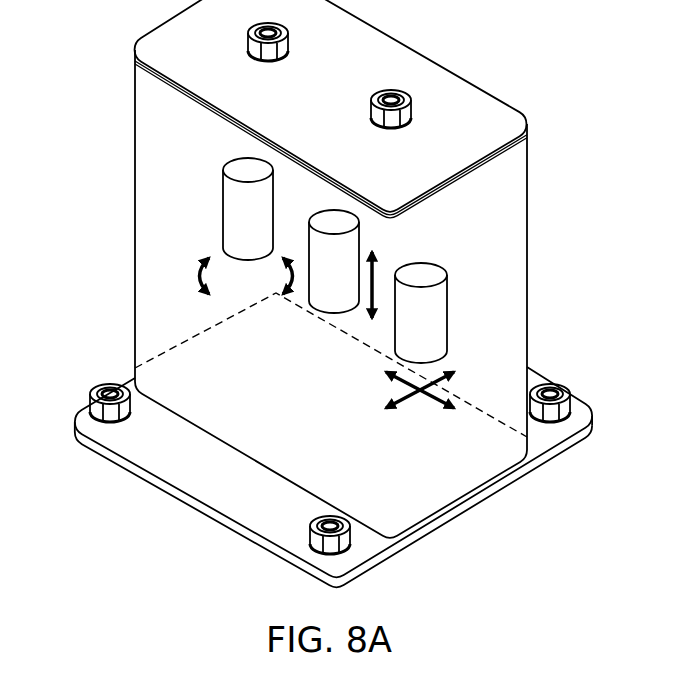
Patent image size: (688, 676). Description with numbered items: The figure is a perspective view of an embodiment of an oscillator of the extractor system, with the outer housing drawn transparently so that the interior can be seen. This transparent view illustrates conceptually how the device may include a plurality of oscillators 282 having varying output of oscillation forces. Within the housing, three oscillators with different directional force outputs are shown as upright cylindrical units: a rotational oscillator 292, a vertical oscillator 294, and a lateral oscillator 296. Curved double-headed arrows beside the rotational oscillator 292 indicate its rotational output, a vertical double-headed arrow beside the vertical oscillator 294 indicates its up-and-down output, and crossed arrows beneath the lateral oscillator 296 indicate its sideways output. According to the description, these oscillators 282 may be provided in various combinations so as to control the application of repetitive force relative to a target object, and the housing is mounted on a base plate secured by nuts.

The oscillators 282 is at (157, 173).
The rotational oscillator 292 is at (237, 168).
The vertical oscillator 294 is at (329, 314).
The lateral oscillator 296 is at (437, 272).